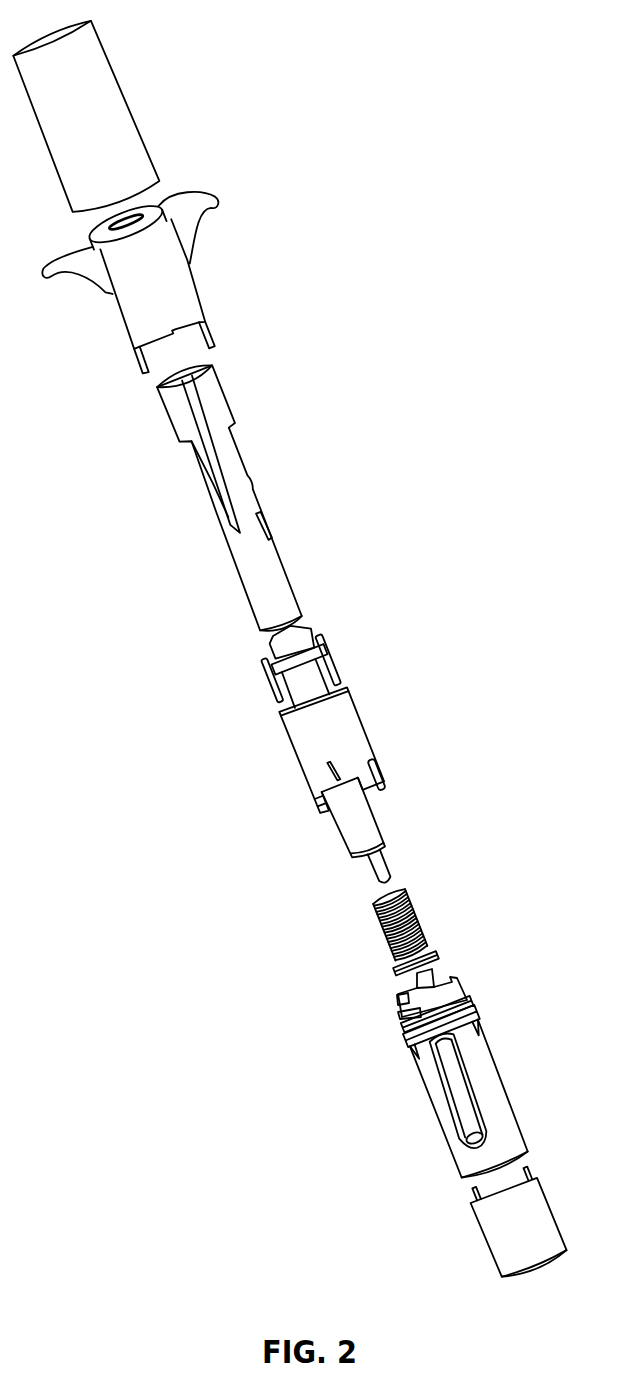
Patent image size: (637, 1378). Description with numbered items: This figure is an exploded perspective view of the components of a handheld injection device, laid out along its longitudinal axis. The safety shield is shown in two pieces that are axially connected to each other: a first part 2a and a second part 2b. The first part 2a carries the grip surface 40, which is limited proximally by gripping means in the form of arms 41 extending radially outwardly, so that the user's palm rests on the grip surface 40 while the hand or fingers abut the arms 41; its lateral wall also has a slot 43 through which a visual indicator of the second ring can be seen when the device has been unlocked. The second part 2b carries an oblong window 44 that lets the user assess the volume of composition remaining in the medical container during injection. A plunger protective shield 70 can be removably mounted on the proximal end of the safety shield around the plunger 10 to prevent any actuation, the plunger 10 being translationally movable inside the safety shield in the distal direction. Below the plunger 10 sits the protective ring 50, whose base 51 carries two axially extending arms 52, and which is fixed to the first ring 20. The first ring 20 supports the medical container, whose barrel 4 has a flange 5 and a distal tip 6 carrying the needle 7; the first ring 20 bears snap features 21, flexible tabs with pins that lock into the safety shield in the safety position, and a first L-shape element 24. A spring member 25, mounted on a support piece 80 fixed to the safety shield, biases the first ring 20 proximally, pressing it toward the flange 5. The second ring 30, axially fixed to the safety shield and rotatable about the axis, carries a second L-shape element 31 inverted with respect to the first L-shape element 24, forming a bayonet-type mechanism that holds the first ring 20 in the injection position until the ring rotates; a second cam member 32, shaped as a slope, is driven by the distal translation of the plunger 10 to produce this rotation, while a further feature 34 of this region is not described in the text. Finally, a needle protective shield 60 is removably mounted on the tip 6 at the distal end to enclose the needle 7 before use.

The plunger protective shield 70 is at (117, 95).
The arms 41 is at (213, 207).
The first part 2a is at (169, 281).
The grip surface 40 is at (118, 302).
The slot 43 is at (130, 347).
The plunger 10 is at (240, 475).
The protective ring 50 is at (310, 640).
The base 51 is at (270, 645).
The arms 52 is at (335, 655).
The flange 5 is at (280, 673).
The first ring 20 is at (361, 757).
The snap features 21 is at (375, 775).
The first L-shape element 24 is at (320, 800).
The barrel 4 is at (365, 817).
The tip 6 is at (380, 863).
The needle 7 is at (383, 890).
The spring member 25 is at (402, 925).
The support piece 80 is at (430, 960).
The second ring 30 is at (435, 1017).
The second L-shape element 31 is at (400, 985).
The tab 34 is at (400, 1010).
The second cam member 32 is at (405, 1025).
The second part 2b is at (490, 1094).
The window 44 is at (475, 1110).
The needle protective shield 60 is at (540, 1207).